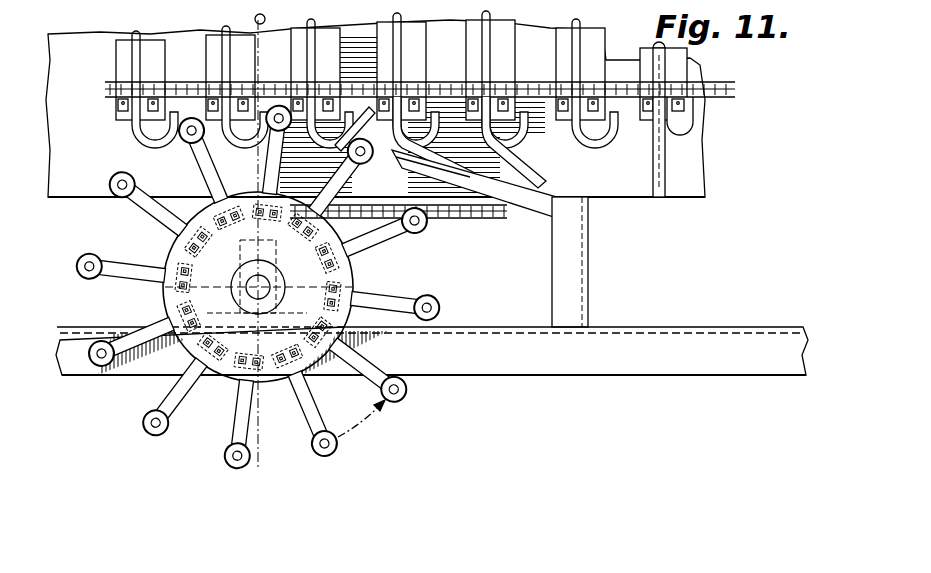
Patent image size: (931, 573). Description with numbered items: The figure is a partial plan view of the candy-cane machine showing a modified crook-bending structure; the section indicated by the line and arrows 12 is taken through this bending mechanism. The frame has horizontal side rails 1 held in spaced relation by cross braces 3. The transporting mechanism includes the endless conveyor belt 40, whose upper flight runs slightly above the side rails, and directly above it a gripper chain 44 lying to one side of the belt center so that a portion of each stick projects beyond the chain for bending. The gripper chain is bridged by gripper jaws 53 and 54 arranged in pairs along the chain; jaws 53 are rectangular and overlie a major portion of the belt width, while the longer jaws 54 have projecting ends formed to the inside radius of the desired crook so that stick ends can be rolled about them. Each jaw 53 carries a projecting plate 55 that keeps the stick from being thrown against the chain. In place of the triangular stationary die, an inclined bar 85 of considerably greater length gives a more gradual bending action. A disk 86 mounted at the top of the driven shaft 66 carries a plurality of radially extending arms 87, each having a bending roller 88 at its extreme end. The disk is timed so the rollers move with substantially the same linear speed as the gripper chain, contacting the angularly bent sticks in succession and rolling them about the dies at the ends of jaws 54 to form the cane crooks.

The horizontal side rails 1 is at (665, 365).
The cross braces 3 is at (577, 282).
The section line of FIG. 12 is at (270, 12).
The endless conveyor belt 40 is at (665, 193).
The gripper chain 44 is at (530, 78).
The gripper jaw 53 is at (563, 140).
The gripper jaw 54 is at (152, 146).
The projecting plate 55 is at (578, 58).
The driven shaft 66 is at (270, 289).
The inclined bar 85 is at (533, 196).
The disk 86 is at (352, 279).
The radially extending arms 87 is at (137, 262).
The bending roller 88 is at (350, 147).